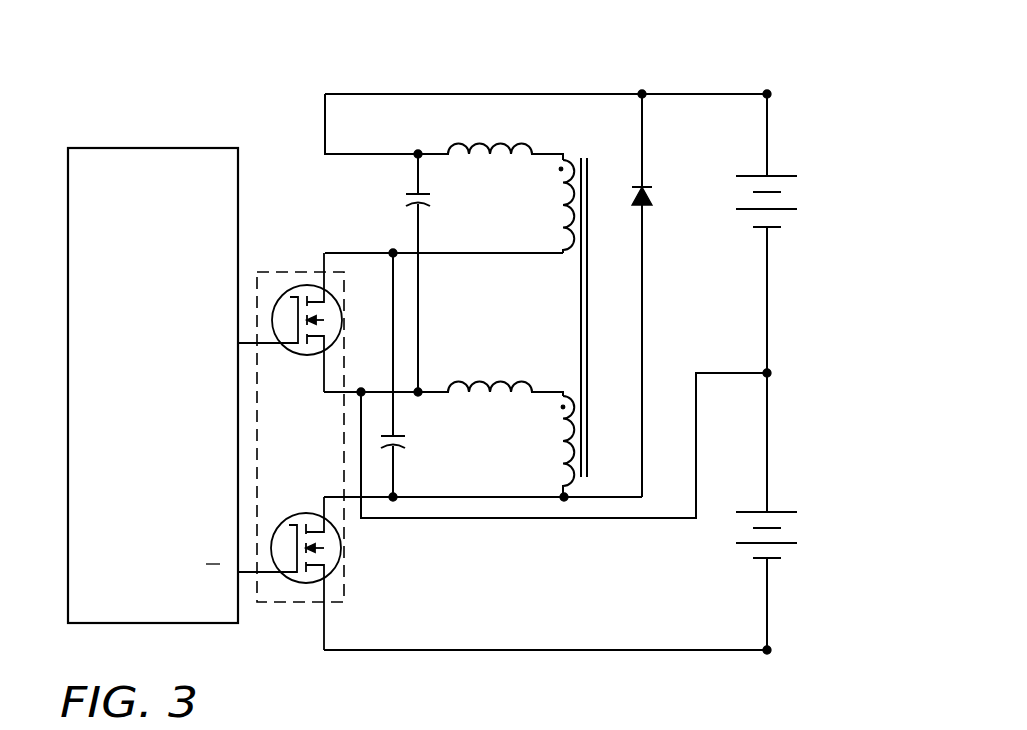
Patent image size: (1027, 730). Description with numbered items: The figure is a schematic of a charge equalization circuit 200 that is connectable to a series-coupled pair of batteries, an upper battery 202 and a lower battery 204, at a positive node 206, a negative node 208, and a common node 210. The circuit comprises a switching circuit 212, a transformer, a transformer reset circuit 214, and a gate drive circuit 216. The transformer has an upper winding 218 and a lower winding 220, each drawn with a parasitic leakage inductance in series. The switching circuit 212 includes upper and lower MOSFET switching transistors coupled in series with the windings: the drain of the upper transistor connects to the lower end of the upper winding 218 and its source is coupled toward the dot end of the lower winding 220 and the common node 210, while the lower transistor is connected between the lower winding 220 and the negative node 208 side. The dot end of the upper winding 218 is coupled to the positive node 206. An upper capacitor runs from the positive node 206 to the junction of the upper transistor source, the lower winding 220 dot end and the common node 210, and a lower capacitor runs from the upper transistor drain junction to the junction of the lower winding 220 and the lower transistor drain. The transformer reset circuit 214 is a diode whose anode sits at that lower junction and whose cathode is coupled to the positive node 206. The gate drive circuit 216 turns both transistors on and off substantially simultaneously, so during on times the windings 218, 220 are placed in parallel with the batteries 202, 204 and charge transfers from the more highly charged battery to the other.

The charge equalization circuit 200 is at (278, 100).
The upper battery 202 is at (790, 200).
The lower battery 204 is at (793, 527).
The positive node 206 is at (768, 84).
The negative node 208 is at (768, 655).
The common node 210 is at (770, 377).
The switching circuit 212 is at (285, 270).
The transformer reset circuit 214 is at (650, 187).
The gate drive circuit 216 is at (137, 160).
The upper winding 218 is at (540, 206).
The lower winding 220 is at (542, 446).